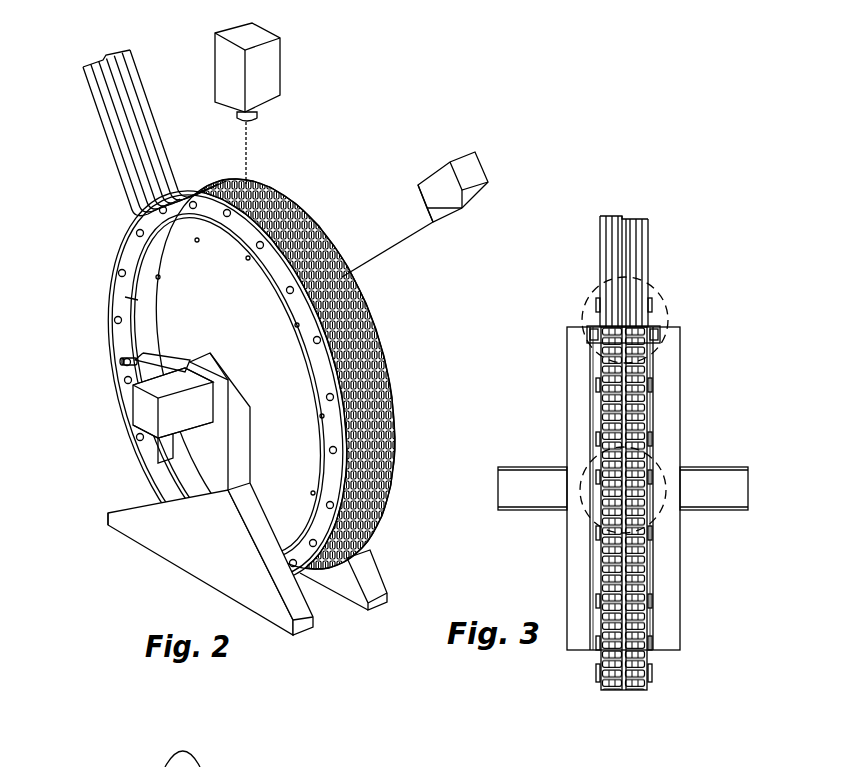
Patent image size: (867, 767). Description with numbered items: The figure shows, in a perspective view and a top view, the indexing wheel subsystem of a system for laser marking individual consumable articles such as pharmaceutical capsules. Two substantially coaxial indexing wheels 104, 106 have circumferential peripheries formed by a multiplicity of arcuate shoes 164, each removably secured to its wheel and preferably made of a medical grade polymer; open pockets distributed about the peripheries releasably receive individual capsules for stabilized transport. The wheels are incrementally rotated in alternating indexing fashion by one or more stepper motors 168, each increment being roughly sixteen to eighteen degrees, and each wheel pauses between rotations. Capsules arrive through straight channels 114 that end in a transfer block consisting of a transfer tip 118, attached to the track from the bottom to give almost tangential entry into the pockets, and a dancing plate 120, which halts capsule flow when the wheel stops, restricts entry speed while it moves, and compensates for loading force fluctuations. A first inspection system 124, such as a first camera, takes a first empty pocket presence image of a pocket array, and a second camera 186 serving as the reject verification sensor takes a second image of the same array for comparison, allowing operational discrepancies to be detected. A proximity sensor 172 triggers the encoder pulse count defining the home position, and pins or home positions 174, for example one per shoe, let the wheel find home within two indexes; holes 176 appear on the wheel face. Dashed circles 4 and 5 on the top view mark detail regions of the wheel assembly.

In FIG. 2, the indexing wheel 104 is at (102, 265).
In FIG. 3, the indexing wheel 104 is at (574, 678).
In FIG. 2, the indexing wheel 106 is at (395, 330).
In FIG. 3, the indexing wheel 106 is at (672, 683).
In FIG. 2, the straight channel 114 is at (128, 82).
In FIG. 2, the transfer tip 118 is at (130, 207).
In FIG. 2, the dancing plate 120 is at (212, 205).
In FIG. 2, the first inspection system 124 is at (270, 70).
In FIG. 2, the arcuate shoe 164 is at (129, 252).
In FIG. 2, the stepper motor 168 is at (147, 418).
In FIG. 3, the stepper motor 168 is at (520, 466).
In FIG. 2, the proximity sensor 172 is at (122, 363).
In FIG. 2, the pin/home position 174 is at (197, 243).
In FIG. 2, the fastener hole 176 is at (310, 341).
In FIG. 2, the second camera 186 is at (438, 180).
In FIG. 3, the detail circle for FIG. 4 is at (582, 310).
In FIG. 3, the detail circle for FIG. 5 is at (658, 514).